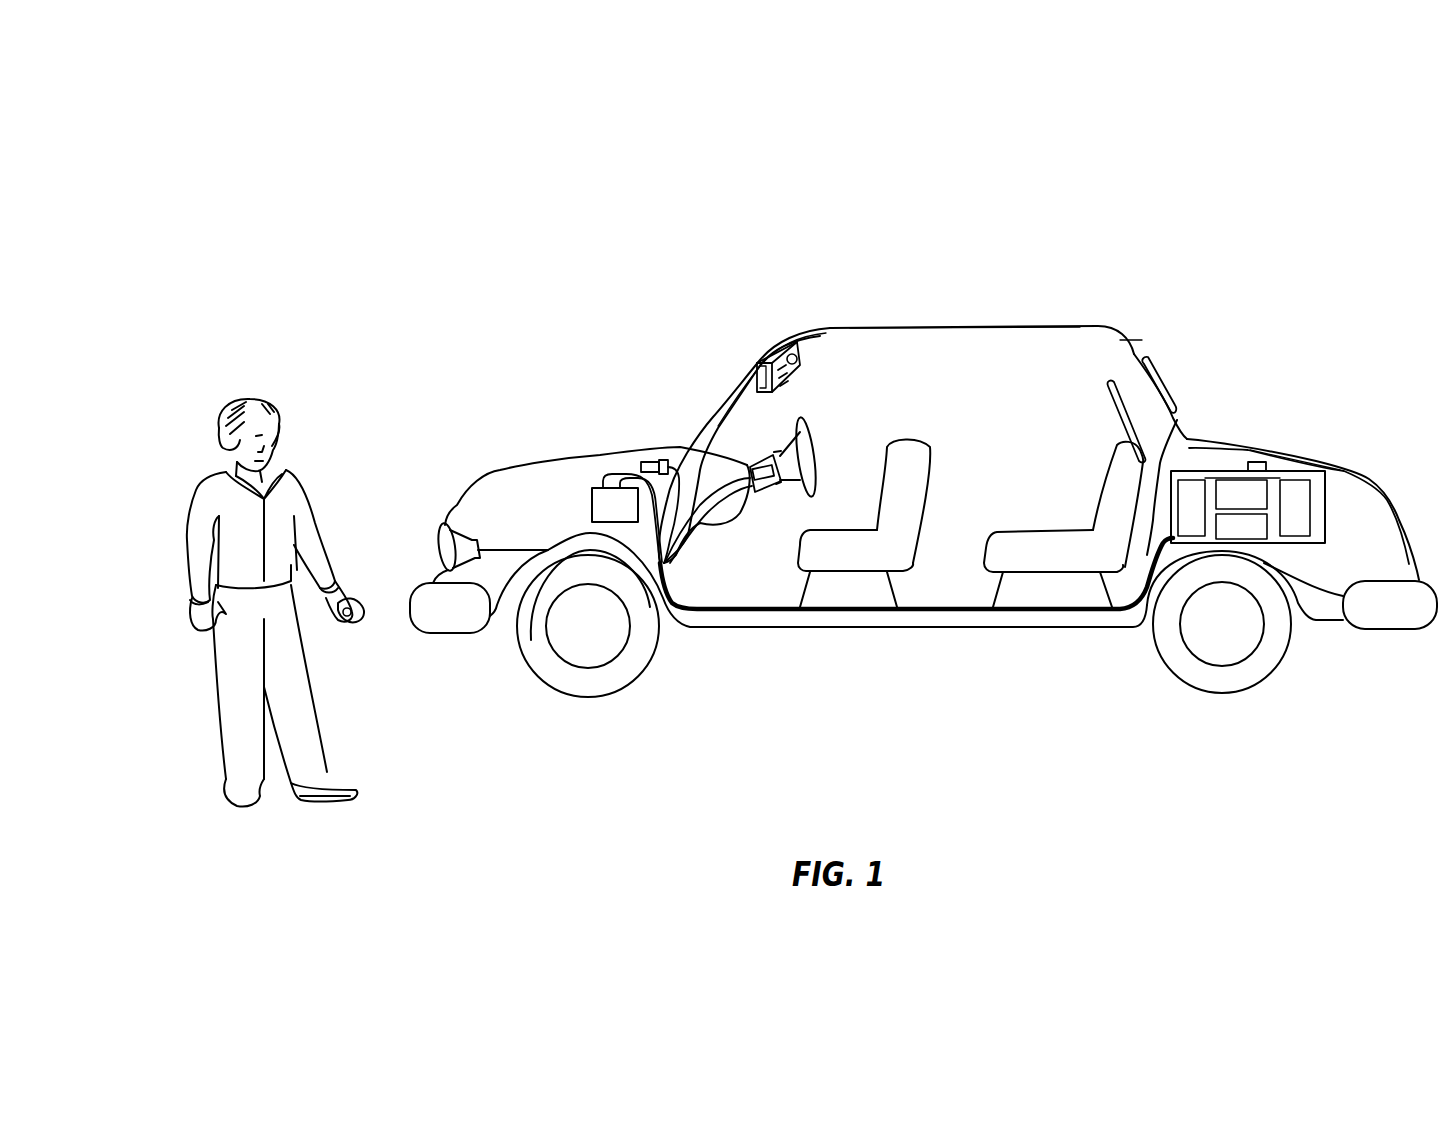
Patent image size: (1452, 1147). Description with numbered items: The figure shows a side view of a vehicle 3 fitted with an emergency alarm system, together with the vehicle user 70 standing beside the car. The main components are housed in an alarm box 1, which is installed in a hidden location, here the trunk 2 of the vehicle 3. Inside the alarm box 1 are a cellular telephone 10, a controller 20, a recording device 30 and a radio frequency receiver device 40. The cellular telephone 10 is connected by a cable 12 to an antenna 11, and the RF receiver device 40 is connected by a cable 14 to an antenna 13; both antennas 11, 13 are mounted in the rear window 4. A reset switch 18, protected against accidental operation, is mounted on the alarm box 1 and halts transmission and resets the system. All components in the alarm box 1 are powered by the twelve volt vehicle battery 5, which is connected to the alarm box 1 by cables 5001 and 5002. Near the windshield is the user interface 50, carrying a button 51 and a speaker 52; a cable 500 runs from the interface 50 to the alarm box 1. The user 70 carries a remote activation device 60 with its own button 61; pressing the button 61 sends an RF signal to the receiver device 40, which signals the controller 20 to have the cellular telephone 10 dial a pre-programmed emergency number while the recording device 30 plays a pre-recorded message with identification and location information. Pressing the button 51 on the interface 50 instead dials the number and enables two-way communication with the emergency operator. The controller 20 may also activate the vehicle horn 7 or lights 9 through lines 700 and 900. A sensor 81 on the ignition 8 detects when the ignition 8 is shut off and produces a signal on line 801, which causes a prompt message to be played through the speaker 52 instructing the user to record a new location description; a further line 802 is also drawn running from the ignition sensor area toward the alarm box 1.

The alarm box 1 is at (1326, 514).
The trunk 2 is at (1298, 461).
The vehicle 3 is at (997, 327).
The rear window 4 is at (1132, 371).
The vehicle battery 5 is at (615, 505).
The vehicle horn 7 is at (650, 462).
The ignition 8 is at (762, 462).
The lights 9 is at (443, 548).
The cellular telephone 10 is at (1248, 507).
The antenna 11 is at (1114, 404).
The cable 12 is at (1141, 486).
The antenna 13 is at (1160, 384).
The cable 14 is at (1184, 446).
The reset switch 18 is at (1255, 461).
The controller 20 is at (1241, 527).
The recording device 30 is at (1241, 494).
The radio frequency receiver device 40 is at (1295, 508).
The user interface 50 is at (786, 343).
The button 51 is at (797, 356).
The speaker 52 is at (773, 360).
The remote activation device 60 is at (340, 602).
The button 61 is at (347, 616).
The vehicle user 70 is at (197, 483).
The sensor 81 is at (754, 486).
The cable 500 is at (740, 398).
The line 700 is at (679, 470).
The line 801 is at (700, 526).
The cable 802 is at (720, 503).
The line 900 is at (514, 548).
The cable 5001 is at (602, 481).
The cable 5002 is at (630, 482).